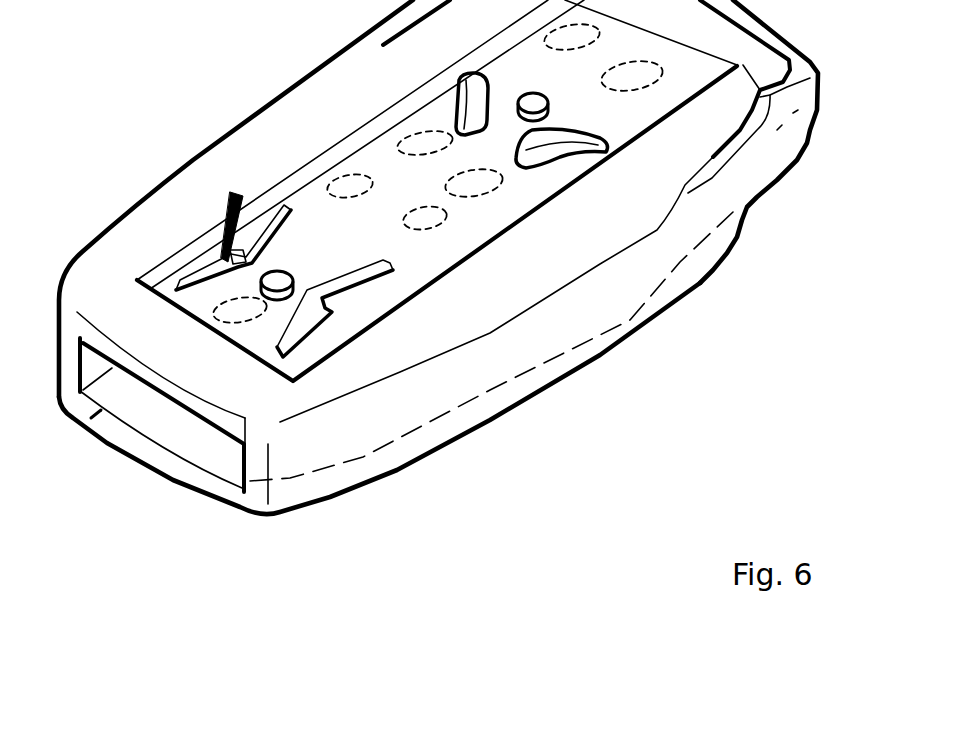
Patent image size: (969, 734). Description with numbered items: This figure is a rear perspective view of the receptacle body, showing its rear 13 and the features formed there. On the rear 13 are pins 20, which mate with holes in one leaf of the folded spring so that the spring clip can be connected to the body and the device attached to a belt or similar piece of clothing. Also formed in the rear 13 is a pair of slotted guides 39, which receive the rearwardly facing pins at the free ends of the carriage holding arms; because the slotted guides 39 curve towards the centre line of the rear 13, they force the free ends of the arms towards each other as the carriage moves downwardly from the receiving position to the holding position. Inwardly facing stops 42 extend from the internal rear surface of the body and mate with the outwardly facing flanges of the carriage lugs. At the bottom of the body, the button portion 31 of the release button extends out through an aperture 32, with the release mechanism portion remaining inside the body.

The rear 13 is at (568, 245).
The pins 20 is at (545, 99).
The button portion 31 is at (173, 480).
The aperture 32 is at (108, 407).
The slotted guide 39 is at (603, 147).
The stops 42 is at (235, 192).